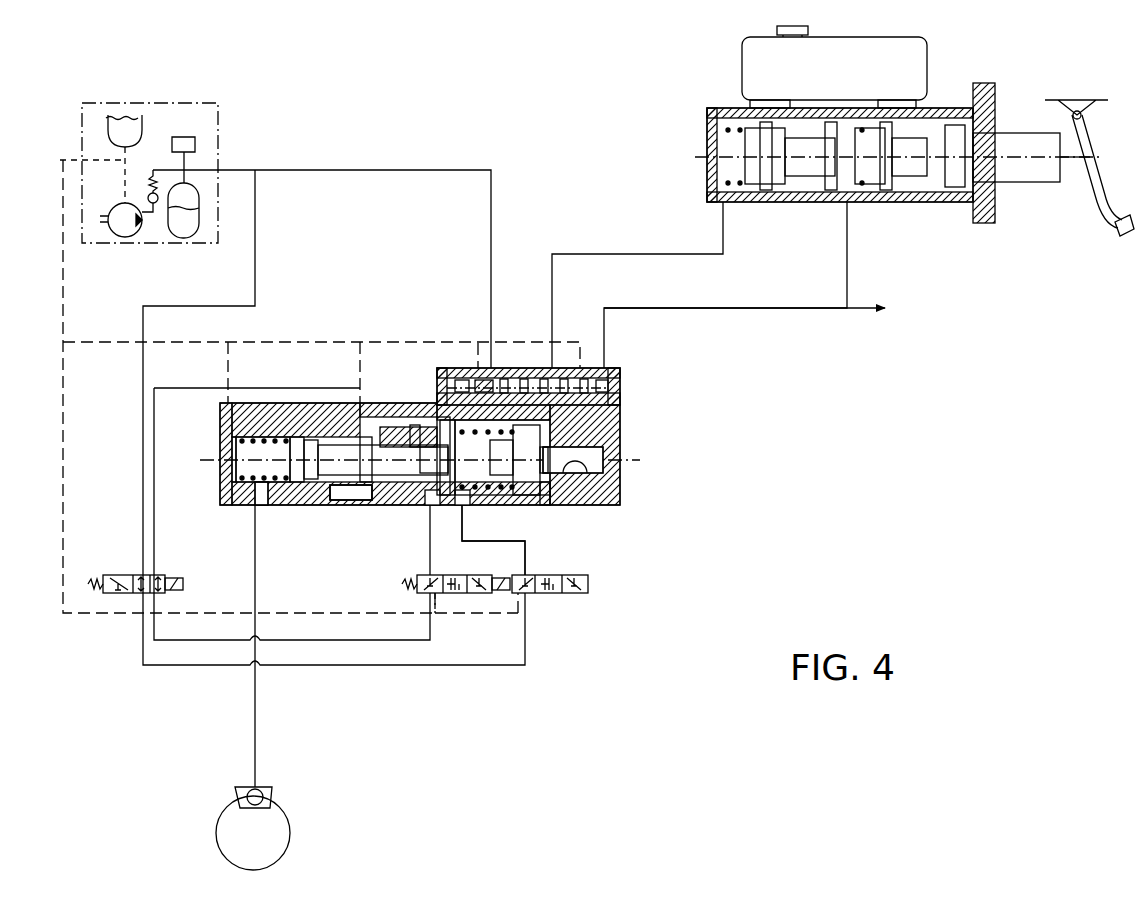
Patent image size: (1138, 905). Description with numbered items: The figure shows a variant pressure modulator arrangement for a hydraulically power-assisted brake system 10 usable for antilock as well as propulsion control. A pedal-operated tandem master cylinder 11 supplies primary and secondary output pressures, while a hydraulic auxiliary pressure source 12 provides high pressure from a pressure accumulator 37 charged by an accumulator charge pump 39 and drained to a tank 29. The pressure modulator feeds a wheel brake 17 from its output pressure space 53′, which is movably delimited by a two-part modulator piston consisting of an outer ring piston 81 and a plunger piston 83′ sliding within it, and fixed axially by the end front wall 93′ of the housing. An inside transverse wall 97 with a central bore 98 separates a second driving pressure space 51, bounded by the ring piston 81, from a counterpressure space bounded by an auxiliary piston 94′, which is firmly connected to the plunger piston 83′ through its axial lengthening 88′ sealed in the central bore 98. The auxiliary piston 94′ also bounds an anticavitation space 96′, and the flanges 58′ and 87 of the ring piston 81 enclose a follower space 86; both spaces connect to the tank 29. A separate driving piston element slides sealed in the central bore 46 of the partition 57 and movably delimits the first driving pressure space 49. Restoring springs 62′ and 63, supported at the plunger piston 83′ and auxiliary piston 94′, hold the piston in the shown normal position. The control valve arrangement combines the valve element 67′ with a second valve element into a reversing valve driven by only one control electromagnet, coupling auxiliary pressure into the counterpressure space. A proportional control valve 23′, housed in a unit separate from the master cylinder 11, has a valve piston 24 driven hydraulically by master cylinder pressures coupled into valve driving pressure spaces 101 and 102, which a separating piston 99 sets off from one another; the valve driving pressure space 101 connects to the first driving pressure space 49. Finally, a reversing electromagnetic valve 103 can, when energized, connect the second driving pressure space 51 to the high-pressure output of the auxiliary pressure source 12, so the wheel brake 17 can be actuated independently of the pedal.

The brake system 10 is at (586, 160).
The brake pressure control device 11 is at (890, 202).
The hydraulic auxiliary pressure source 12 is at (212, 120).
The wheel brake 17 is at (266, 800).
The proportional control valve 23′ is at (510, 385).
The valve piston 24 is at (482, 385).
The tank 29 is at (128, 128).
The pressure accumulator 37 is at (182, 236).
The accumulator charge pump 39 is at (116, 203).
The central bore 46 is at (620, 497).
The first driving pressure space 49 is at (618, 470).
The second driving pressure space 51 is at (443, 418).
The output pressure space 53′ is at (266, 440).
The partition 57 is at (570, 503).
The flange 58′ is at (416, 425).
The restoring spring 62′ is at (296, 484).
The restoring spring 63 is at (483, 541).
The valve element 67′ is at (555, 594).
The ring piston 81 is at (385, 403).
The plunger piston 83′ is at (318, 450).
The follower space 86 is at (365, 500).
The flange 87 is at (312, 484).
The axial lengthening 88′ is at (468, 492).
The end front wall 93′ is at (224, 480).
The auxiliary piston 94′ is at (562, 553).
The anticavitation space 96′ is at (538, 490).
The inside transverse wall 97 is at (447, 497).
The central bore 98 is at (432, 476).
The separating piston 99 is at (620, 412).
The valve driving pressure space 101 is at (558, 390).
The valve driving pressure space 102 is at (618, 394).
The reversing electro-magnetic valve 103 is at (124, 583).